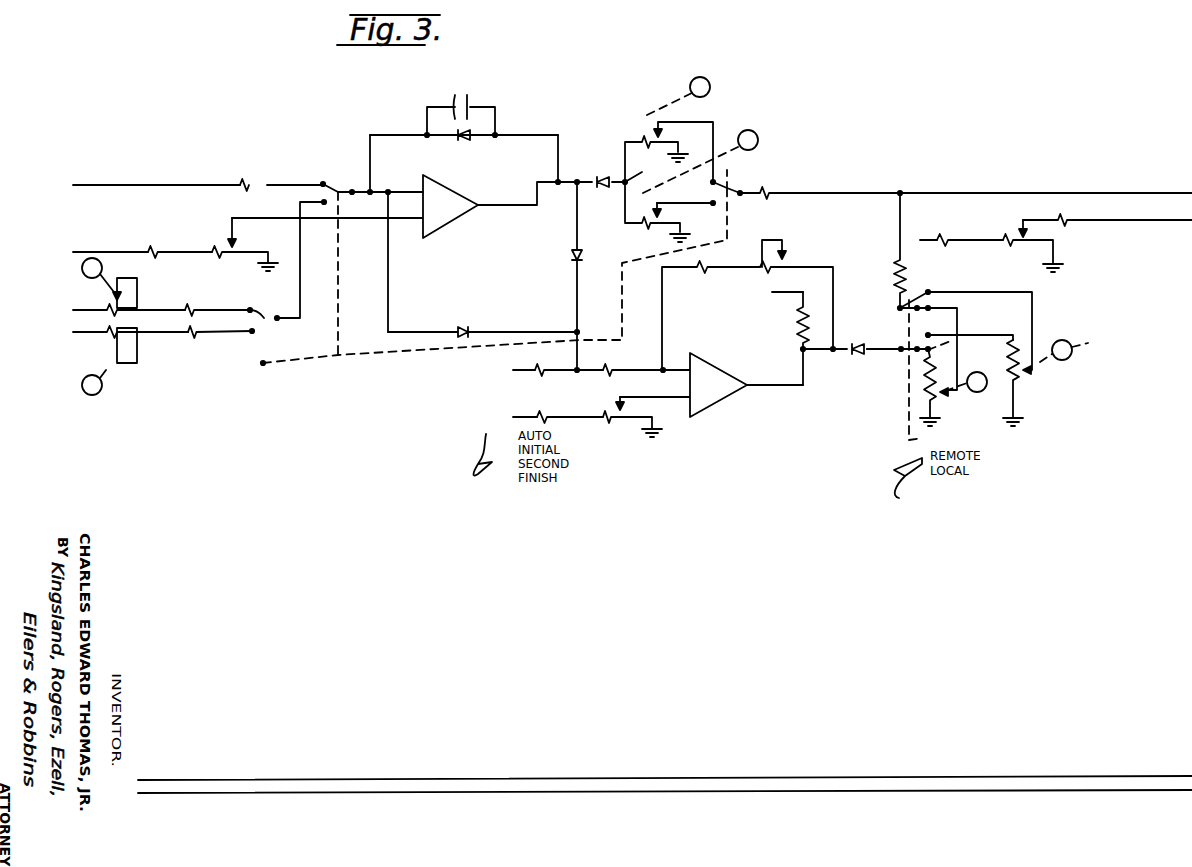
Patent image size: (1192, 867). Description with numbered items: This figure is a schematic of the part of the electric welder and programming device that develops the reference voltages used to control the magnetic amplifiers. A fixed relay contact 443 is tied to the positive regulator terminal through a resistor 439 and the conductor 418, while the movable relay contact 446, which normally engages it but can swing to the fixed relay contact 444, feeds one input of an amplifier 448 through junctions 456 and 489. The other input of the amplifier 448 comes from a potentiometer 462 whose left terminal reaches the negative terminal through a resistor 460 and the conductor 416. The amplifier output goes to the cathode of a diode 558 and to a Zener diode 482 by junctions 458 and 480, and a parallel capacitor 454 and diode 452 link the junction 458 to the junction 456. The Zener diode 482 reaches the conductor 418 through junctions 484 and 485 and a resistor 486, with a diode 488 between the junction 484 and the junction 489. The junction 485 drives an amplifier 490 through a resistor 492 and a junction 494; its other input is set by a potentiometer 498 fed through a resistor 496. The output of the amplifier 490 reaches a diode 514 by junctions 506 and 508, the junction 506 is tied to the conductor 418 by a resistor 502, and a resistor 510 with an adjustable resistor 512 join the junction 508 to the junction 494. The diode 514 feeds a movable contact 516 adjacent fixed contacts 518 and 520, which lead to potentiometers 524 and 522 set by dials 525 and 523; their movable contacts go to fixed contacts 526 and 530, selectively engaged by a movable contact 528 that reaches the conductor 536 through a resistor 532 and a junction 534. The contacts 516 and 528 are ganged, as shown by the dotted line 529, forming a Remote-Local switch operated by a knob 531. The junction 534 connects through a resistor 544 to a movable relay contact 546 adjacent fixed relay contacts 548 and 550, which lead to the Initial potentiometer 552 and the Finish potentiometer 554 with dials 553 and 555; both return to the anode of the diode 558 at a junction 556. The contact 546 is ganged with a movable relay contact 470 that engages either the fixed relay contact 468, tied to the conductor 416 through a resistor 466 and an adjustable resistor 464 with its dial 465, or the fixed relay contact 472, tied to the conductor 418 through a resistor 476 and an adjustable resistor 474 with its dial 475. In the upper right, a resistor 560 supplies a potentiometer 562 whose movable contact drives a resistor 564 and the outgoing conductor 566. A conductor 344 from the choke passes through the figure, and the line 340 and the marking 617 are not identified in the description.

The conductor 418 is at (113, 184).
The conductor 416 is at (113, 252).
The resistor 439 is at (250, 179).
The fixed relay contact 443 is at (319, 183).
The movable relay contact 446 is at (350, 191).
The fixed relay contact 444 is at (323, 203).
The junction 456 is at (371, 191).
The junction 489 is at (384, 193).
The capacitor 454 is at (468, 104).
The diode 452 is at (464, 147).
The junction 458 is at (553, 182).
The amplifier 448 is at (438, 230).
The junction 480 is at (577, 180).
The diode 558 is at (608, 185).
The Zener diode 482 is at (575, 255).
The diode 488 is at (458, 332).
The junction 484 is at (575, 332).
The resistor 460 is at (167, 252).
The potentiometer 462 is at (217, 254).
The dial 465 is at (82, 268).
The adjustable resistor 464 is at (137, 307).
The resistor 466 is at (192, 308).
The fixed relay contact 468 is at (248, 310).
The movable relay contact 470 is at (274, 318).
The adjustable resistor 474 is at (136, 332).
The fixed relay contact 472 is at (252, 332).
The resistor 476 is at (143, 348).
The dial 475 is at (82, 385).
The Initial welding current potentiometer 552 is at (654, 130).
The dial 553 is at (710, 88).
The dial 555 is at (758, 136).
The junction 556 is at (655, 160).
The fixed relay contact 548 is at (711, 182).
The movable relay contact 546 is at (728, 180).
The resistor 544 is at (783, 193).
The fixed relay contact 550 is at (708, 204).
The Finish welding current potentiometer 554 is at (657, 226).
The junction 534 is at (900, 192).
The conductor 536 is at (1165, 178).
The conductor 566 is at (1177, 218).
The resistor 564 is at (1099, 222).
The resistor 560 is at (992, 222).
The potentiometer 562 is at (1022, 248).
The resistor 532 is at (902, 270).
The fixed contact 530 is at (928, 289).
The fixed contact 526 is at (930, 308).
The movable contact 528 is at (900, 310).
The fixed contact 520 is at (929, 336).
The fixed contact 518 is at (984, 345).
The dial 525 is at (984, 371).
The Second welding current potentiometer 524 is at (941, 393).
The dial 523 is at (1090, 345).
The welding current potentiometer 522 is at (1037, 364).
The dotted line 529 is at (956, 434).
The knob 531 is at (915, 488).
The movable contact 516 is at (901, 352).
The diode 514 is at (862, 357).
The junction 508 is at (832, 353).
The junction 506 is at (799, 349).
The resistor 502 is at (793, 320).
The adjustable resistor 512 is at (784, 258).
The resistor 510 is at (715, 270).
The junction 494 is at (663, 370).
The resistor 492 is at (608, 352).
The junction 485 is at (578, 373).
The resistor 486 is at (560, 372).
The resistor 496 is at (548, 416).
The potentiometer 498 is at (630, 425).
The amplifier 490 is at (705, 411).
The mode selector 617 is at (514, 417).
The conductor 340 is at (140, 782).
The conductor 344 is at (248, 780).